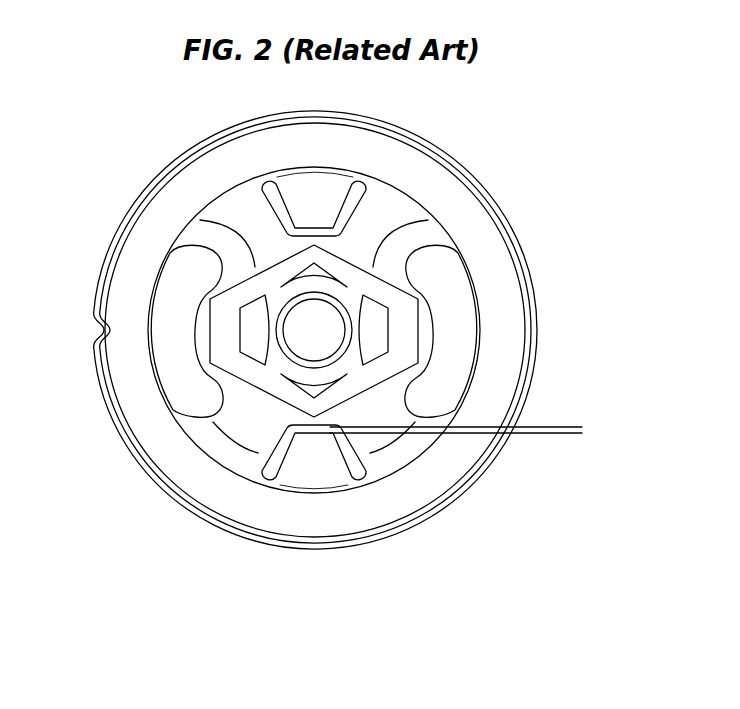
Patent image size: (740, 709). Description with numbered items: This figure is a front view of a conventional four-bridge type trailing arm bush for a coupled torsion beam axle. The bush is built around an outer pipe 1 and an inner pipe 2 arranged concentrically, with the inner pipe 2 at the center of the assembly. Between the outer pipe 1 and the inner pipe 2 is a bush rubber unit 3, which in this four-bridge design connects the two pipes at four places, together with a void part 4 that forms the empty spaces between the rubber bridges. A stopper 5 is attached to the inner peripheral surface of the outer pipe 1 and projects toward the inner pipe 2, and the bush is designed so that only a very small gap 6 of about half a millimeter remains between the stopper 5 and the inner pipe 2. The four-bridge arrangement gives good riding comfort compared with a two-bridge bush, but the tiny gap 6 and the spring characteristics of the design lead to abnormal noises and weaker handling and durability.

The outer pipe 1 is at (477, 242).
The inner pipe 2 is at (313, 328).
The bush rubber unit 3 is at (242, 217).
The void part 4 is at (195, 396).
The stopper 5 is at (315, 465).
The gap 6 is at (573, 383).